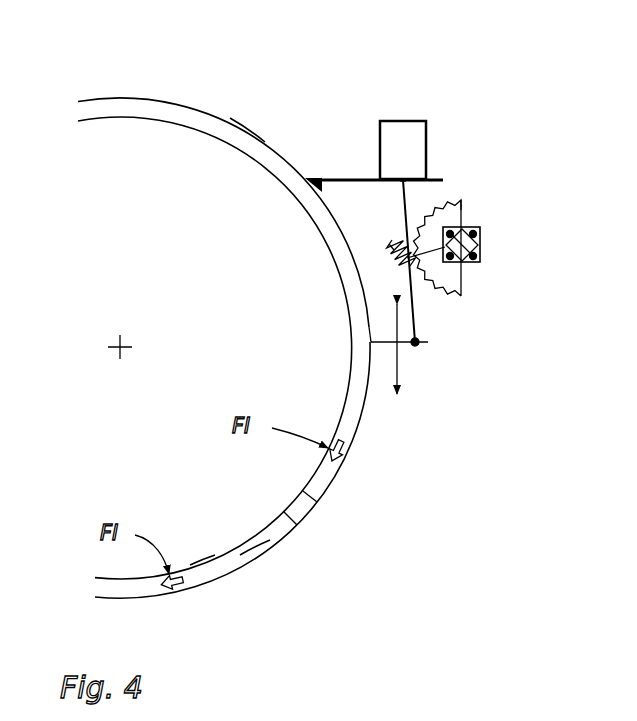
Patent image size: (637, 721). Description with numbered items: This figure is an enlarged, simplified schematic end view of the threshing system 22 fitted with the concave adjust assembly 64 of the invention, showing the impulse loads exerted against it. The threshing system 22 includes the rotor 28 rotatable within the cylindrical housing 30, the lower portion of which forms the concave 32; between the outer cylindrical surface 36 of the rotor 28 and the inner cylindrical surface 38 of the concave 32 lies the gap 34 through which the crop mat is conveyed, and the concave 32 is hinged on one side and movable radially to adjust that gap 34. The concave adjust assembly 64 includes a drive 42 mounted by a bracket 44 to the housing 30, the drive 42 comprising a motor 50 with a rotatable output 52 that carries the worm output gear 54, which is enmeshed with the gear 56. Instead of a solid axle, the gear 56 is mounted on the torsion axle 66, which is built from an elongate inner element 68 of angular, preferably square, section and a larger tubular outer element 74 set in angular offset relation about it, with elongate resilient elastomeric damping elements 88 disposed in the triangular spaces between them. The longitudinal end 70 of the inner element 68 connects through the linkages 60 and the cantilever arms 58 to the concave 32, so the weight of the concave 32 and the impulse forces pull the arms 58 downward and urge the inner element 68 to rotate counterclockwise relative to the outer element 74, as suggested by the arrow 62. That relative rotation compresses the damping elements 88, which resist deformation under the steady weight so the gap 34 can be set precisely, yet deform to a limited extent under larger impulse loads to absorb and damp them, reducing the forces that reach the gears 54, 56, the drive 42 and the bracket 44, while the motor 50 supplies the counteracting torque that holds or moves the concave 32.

The threshing system 22 is at (220, 75).
The rotor 28 is at (127, 114).
The housing 30 is at (250, 132).
The concave 32 is at (257, 560).
The gap 34 is at (202, 573).
The outer cylindrical surface 36 is at (318, 500).
The inner cylindrical surface 38 is at (290, 517).
The drive 42 is at (427, 145).
The bracket 44 is at (343, 180).
The motor 50 is at (427, 127).
The output 52 is at (403, 193).
The output gear 54 is at (392, 247).
The gear 56 is at (438, 297).
The cantilever arms 58 is at (428, 264).
The linkages 60 is at (407, 284).
The arrow 62 is at (397, 367).
The concave adjust assembly 64 is at (416, 110).
The torsion axle 66 is at (484, 228).
The inner element 68 is at (482, 240).
The longitudinal end 70 is at (482, 240).
The outer element 74 is at (479, 223).
The damping elements 88 is at (410, 218).